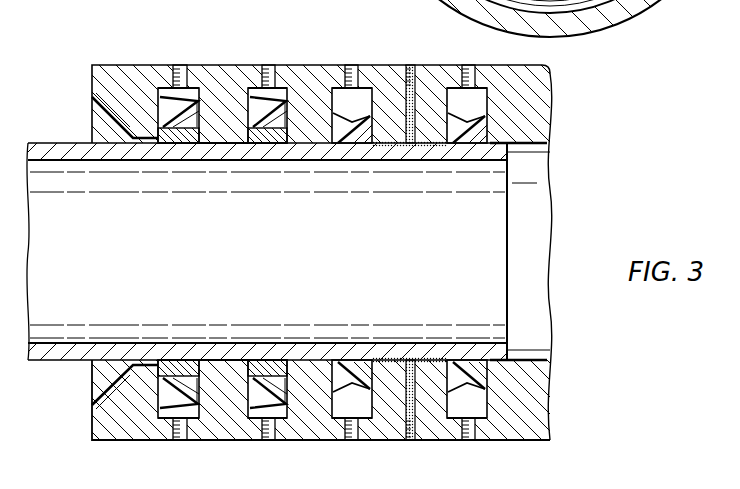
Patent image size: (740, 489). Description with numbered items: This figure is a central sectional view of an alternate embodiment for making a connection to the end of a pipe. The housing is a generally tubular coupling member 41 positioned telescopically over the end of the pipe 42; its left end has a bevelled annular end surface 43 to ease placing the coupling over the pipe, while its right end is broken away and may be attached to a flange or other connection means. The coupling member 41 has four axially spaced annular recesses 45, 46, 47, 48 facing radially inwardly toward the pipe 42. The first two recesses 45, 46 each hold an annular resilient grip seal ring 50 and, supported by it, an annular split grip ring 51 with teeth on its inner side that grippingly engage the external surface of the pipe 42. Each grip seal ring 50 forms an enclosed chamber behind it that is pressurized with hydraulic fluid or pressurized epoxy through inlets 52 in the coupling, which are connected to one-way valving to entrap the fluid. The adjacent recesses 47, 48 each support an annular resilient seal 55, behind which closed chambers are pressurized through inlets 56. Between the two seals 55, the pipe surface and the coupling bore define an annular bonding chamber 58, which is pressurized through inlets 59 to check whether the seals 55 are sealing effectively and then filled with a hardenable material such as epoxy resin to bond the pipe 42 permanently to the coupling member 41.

The coupling member 41 is at (213, 62).
The pipe 42 is at (402, 147).
The bevelled annular end surface 43 is at (94, 105).
The annular recess 45 is at (160, 110).
The annular recess 46 is at (286, 110).
The annular recess 47 is at (372, 128).
The annular recess 48 is at (491, 126).
The annular resilient grip seal ring 50 is at (243, 146).
The annular split grip ring 51 is at (163, 146).
The inlet 52 is at (178, 63).
The annular resilient seal 55 is at (362, 139).
The inlet 56 is at (349, 63).
The annular bonding chamber 58 is at (430, 147).
The inlet 59 is at (410, 63).